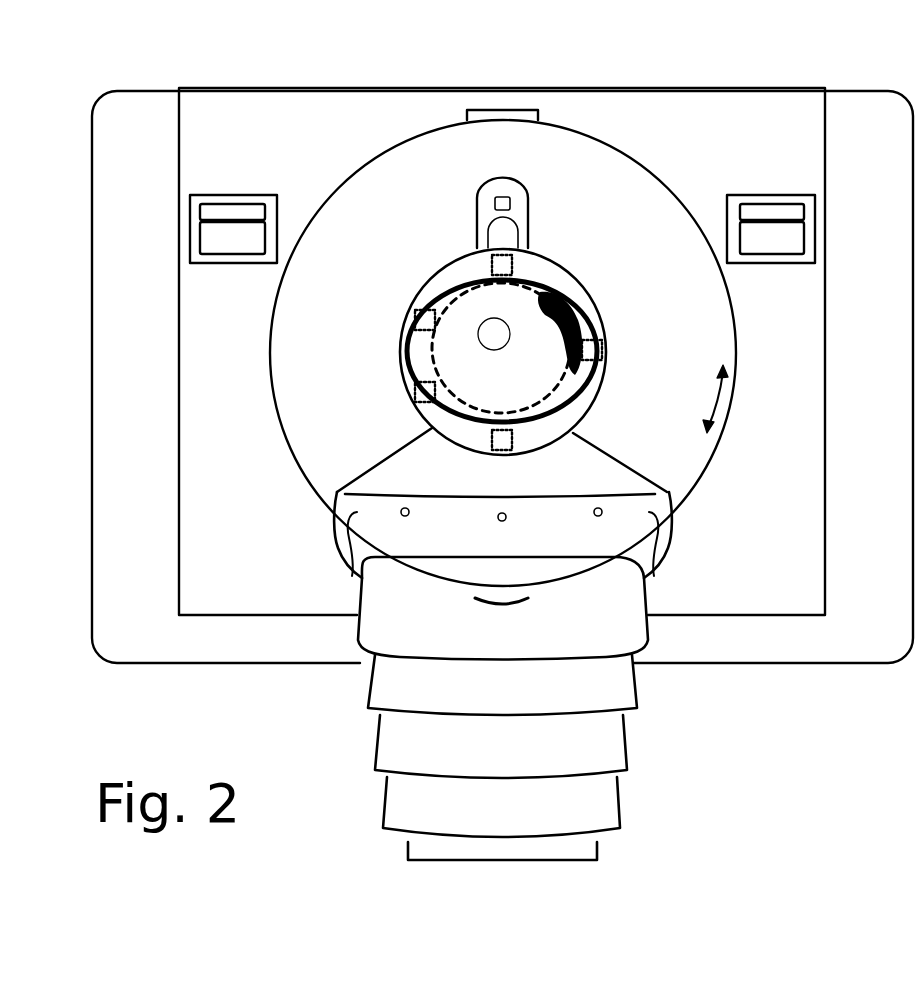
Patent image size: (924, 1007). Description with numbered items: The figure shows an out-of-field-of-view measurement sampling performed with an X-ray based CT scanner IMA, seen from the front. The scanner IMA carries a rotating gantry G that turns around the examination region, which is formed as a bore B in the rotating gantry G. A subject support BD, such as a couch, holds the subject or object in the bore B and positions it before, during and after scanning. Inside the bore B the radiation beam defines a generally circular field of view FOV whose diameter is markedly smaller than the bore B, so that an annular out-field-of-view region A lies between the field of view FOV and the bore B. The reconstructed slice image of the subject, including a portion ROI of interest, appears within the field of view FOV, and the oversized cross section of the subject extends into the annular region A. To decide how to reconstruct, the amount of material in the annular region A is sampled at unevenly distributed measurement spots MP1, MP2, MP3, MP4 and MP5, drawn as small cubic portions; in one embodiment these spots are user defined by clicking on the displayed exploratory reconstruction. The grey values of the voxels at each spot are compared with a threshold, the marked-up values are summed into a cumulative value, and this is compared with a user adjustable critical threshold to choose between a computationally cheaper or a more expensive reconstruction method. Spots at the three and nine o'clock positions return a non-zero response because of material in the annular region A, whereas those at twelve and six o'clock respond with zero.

The X-ray based CT scanner IMA is at (780, 100).
The rotating gantry G is at (715, 353).
The field of view FOV is at (522, 305).
The annular out-field-of-view region A is at (577, 295).
The bore B is at (607, 317).
The portion of the subject or object ROI is at (478, 333).
The measurement spot MP1 is at (497, 265).
The measurement spot MP2 is at (418, 316).
The measurement spot MP3 is at (425, 393).
The measurement spot MP4 is at (502, 442).
The measurement spot MP5 is at (596, 350).
The subject support BD is at (638, 483).